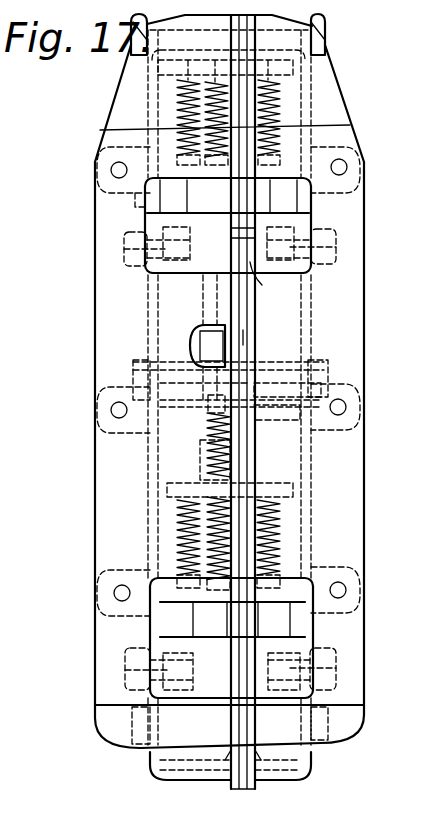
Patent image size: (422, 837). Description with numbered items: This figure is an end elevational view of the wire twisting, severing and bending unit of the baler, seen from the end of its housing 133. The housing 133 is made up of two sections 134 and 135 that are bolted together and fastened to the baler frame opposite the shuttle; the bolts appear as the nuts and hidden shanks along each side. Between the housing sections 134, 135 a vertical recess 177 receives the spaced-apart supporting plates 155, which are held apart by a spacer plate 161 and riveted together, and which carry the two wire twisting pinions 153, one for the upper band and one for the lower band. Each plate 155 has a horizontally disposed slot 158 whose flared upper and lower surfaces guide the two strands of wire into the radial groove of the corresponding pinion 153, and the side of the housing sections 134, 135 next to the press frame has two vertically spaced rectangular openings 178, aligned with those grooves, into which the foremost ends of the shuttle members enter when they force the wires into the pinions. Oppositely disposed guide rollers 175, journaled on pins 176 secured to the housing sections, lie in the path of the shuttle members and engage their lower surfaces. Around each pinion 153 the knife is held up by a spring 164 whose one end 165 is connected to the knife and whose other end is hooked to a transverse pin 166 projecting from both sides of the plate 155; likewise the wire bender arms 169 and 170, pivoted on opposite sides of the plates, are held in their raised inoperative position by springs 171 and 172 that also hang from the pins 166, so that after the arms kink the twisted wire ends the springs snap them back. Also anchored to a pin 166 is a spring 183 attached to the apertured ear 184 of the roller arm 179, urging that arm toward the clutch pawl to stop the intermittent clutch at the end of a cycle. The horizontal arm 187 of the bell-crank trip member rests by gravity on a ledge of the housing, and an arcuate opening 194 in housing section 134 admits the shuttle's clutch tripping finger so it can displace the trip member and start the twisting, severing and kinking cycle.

The housing 133 is at (85, 366).
The housing section 134 is at (100, 444).
The housing section 135 is at (346, 450).
The wire twisting pinion 153 is at (237, 232).
The supporting plate 155 is at (252, 722).
The slot 158 is at (250, 262).
The spacer plate 161 is at (242, 330).
The spring 164 is at (218, 503).
The spring end 165 is at (150, 566).
The pin 166 is at (170, 70).
The wire bender arm 169 is at (96, 603).
The wire bender arm 170 is at (281, 568).
The spring 171 is at (205, 95).
The spring 172 is at (285, 92).
The guide roller 175 is at (200, 290).
The pin 176 is at (130, 250).
The vertical recess 177 is at (231, 683).
The rectangular opening 178 is at (148, 187).
The roller arm 179 is at (212, 420).
The spring 183 is at (203, 452).
The apertured ear 184 is at (256, 424).
The trip member arm 187 is at (200, 344).
The arcuate opening 194 is at (192, 348).